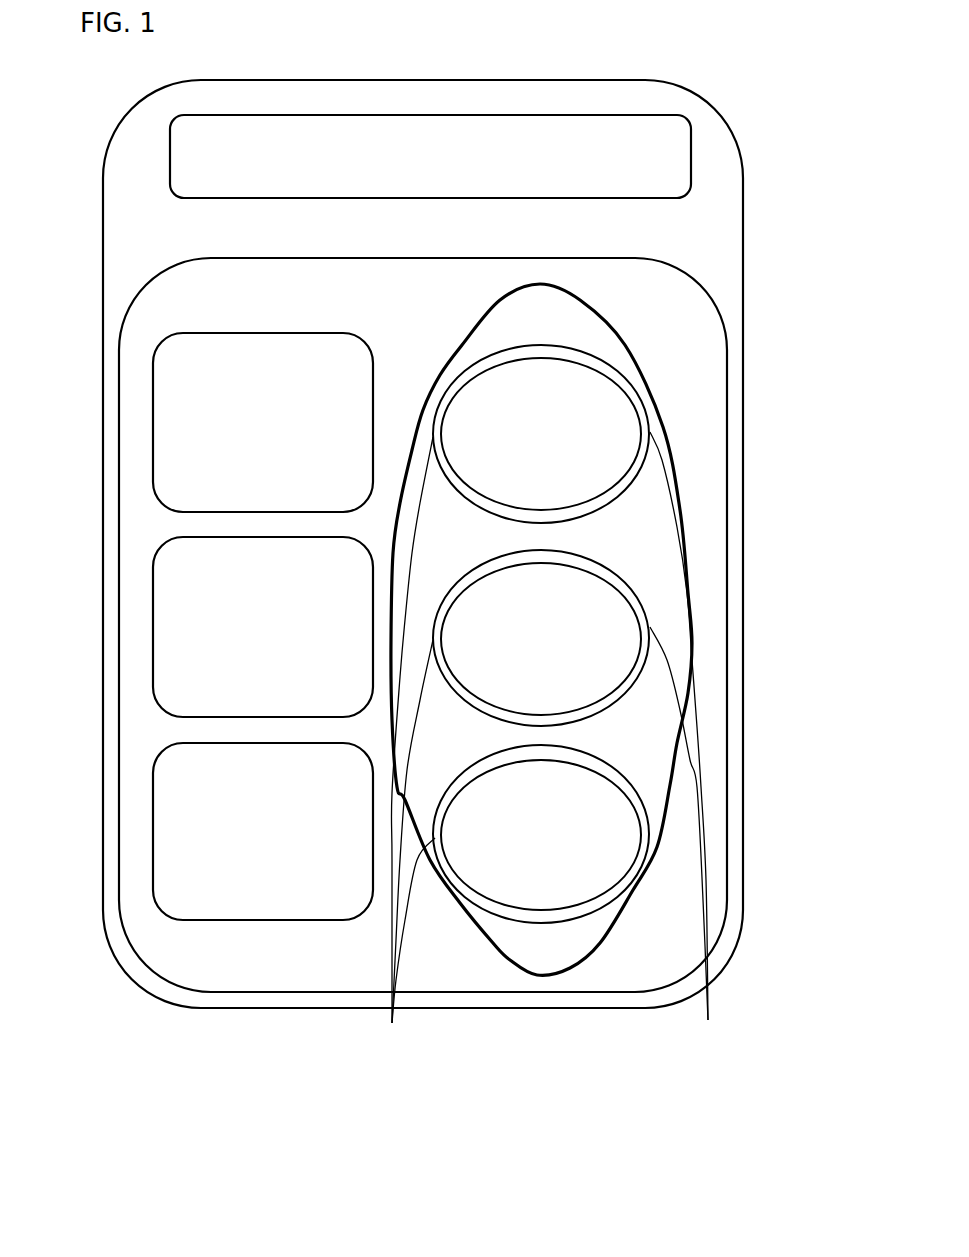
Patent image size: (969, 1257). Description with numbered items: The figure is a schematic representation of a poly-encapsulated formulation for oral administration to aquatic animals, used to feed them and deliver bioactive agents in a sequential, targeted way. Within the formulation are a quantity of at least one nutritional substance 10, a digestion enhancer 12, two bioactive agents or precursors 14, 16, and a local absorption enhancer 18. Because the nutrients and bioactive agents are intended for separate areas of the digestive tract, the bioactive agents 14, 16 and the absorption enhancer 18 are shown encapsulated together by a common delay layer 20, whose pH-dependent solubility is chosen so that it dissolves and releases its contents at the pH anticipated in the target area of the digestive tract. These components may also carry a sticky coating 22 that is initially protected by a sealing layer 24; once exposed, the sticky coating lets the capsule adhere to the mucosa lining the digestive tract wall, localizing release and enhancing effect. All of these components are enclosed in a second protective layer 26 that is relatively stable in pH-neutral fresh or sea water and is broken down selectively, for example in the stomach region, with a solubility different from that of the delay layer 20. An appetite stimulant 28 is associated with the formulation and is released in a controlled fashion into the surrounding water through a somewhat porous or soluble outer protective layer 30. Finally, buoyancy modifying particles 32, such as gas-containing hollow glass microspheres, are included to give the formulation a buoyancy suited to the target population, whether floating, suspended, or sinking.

The nutritional substance 10 is at (152, 425).
The digestion enhancer 12 is at (152, 628).
The bioactive agent 14 is at (625, 435).
The bioactive agent 16 is at (622, 625).
The local absorption enhancer 18 is at (625, 830).
The delay layer 20 is at (537, 975).
The sticky coating 22 is at (390, 774).
The sealing layer 24 is at (630, 890).
The protective layer 26 is at (227, 993).
The appetite stimulant 28 is at (168, 157).
The outer protective layer 30 is at (423, 80).
The buoyancy modifying particles 32 is at (153, 833).